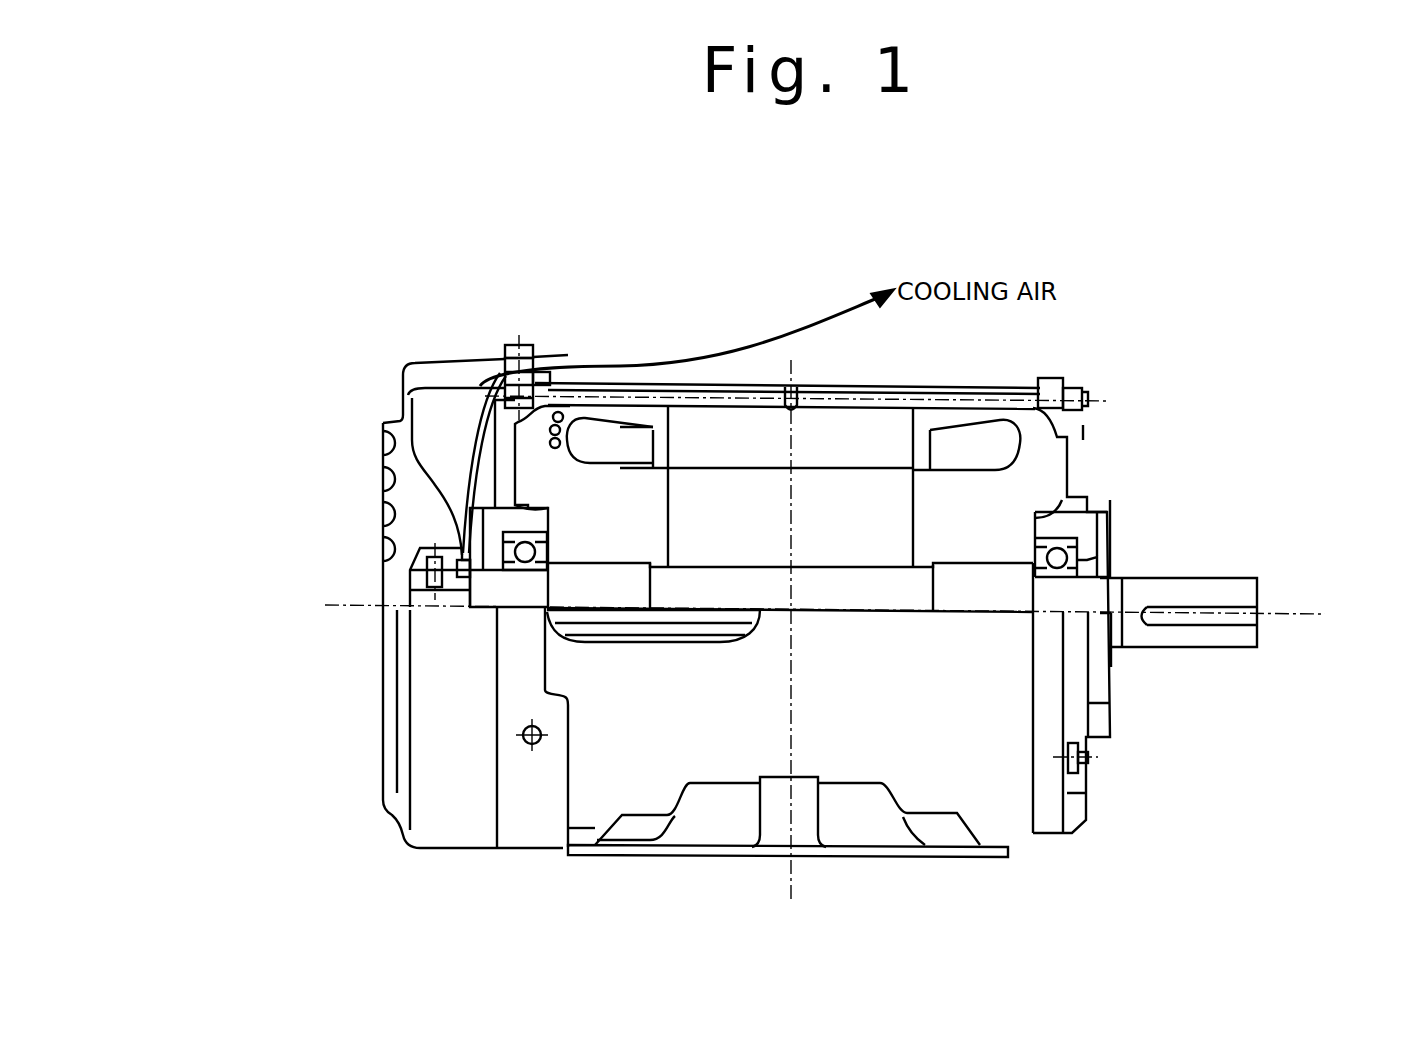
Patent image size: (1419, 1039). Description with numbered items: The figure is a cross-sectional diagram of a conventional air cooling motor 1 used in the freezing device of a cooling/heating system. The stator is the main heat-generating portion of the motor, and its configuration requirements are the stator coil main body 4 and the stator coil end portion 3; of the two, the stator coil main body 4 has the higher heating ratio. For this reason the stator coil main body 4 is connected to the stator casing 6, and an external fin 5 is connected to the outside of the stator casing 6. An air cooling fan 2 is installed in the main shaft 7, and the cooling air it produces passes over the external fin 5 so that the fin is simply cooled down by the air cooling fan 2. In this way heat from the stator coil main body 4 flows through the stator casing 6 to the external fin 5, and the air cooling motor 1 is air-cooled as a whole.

The air cooling motor 1 is at (1040, 182).
The air cooling fan 2 is at (433, 413).
The stator coil end portion 3 is at (578, 423).
The stator coil main body 4 is at (695, 430).
The external fin 5 is at (993, 386).
The stator casing 6 is at (1087, 410).
The main shaft 7 is at (1223, 595).